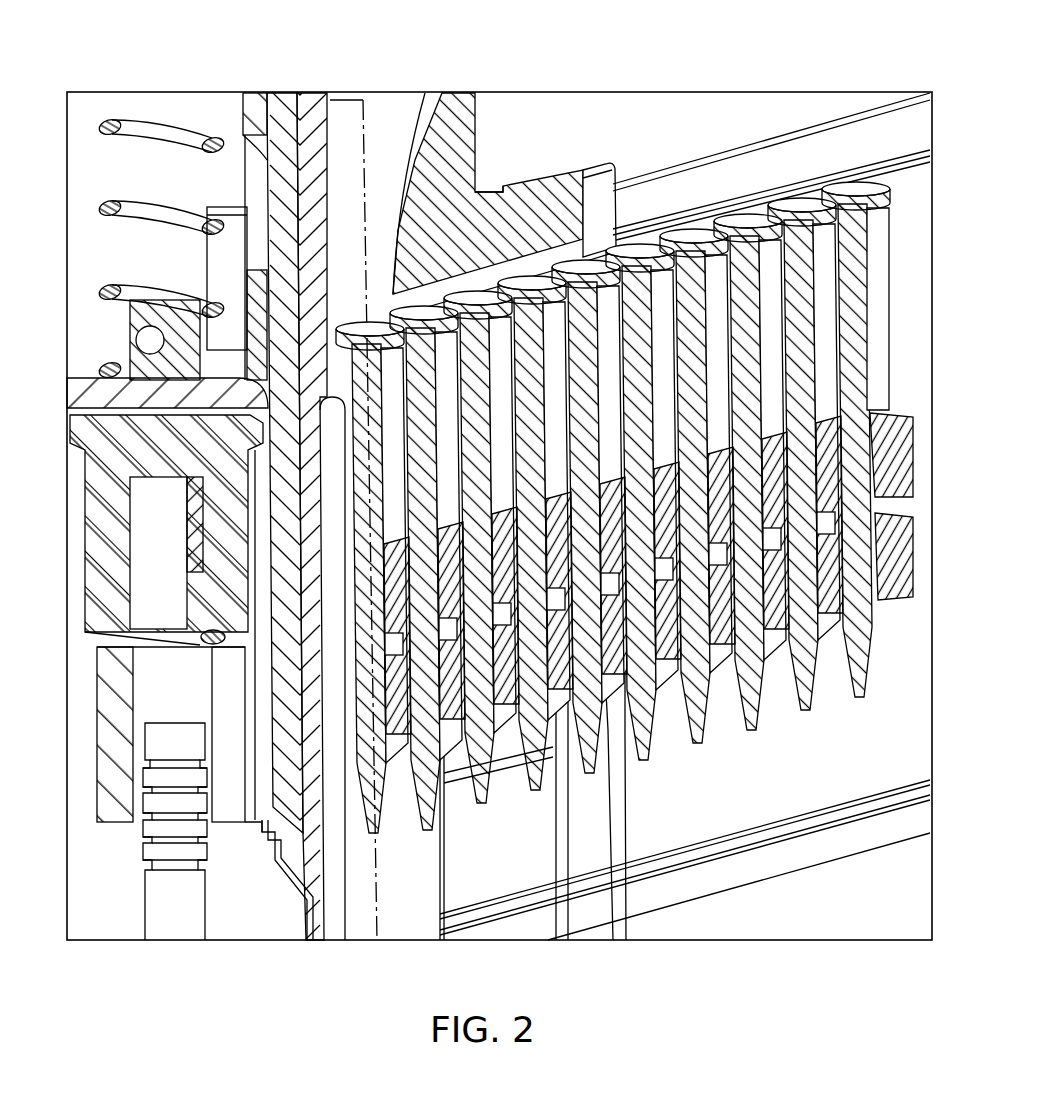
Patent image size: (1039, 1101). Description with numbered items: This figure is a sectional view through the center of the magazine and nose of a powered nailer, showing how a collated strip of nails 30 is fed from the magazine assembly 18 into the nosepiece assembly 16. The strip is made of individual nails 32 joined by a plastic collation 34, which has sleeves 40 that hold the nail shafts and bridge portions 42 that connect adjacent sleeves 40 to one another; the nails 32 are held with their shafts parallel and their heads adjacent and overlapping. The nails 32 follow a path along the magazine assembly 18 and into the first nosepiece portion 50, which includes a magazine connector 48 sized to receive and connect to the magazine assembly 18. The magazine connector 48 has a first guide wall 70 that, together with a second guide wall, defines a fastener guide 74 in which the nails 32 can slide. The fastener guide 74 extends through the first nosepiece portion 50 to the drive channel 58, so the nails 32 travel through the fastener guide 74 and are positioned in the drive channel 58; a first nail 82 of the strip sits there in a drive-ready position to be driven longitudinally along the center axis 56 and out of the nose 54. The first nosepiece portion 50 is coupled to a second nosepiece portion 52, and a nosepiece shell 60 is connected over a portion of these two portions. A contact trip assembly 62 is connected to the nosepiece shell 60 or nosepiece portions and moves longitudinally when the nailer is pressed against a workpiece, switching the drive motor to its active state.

The nosepiece assembly 16 is at (90, 57).
The magazine assembly 18 is at (780, 125).
The collated strip of nails 30 is at (633, 507).
The nail 32 is at (860, 622).
The collation 34 is at (887, 405).
The sleeve 40 is at (817, 423).
The bridge portion 42 is at (785, 675).
The magazine connector 48 is at (636, 147).
The first nosepiece portion 50 is at (463, 98).
The second nosepiece portion 52 is at (316, 104).
The nose 54 is at (320, 942).
The center axis 56 is at (362, 100).
The drive channel 58 is at (397, 108).
The nosepiece shell 60 is at (290, 835).
The contact trip assembly 62 is at (84, 737).
The first guide wall 70 is at (530, 268).
The fastener guide 74 is at (604, 232).
The first nail 82 is at (362, 388).